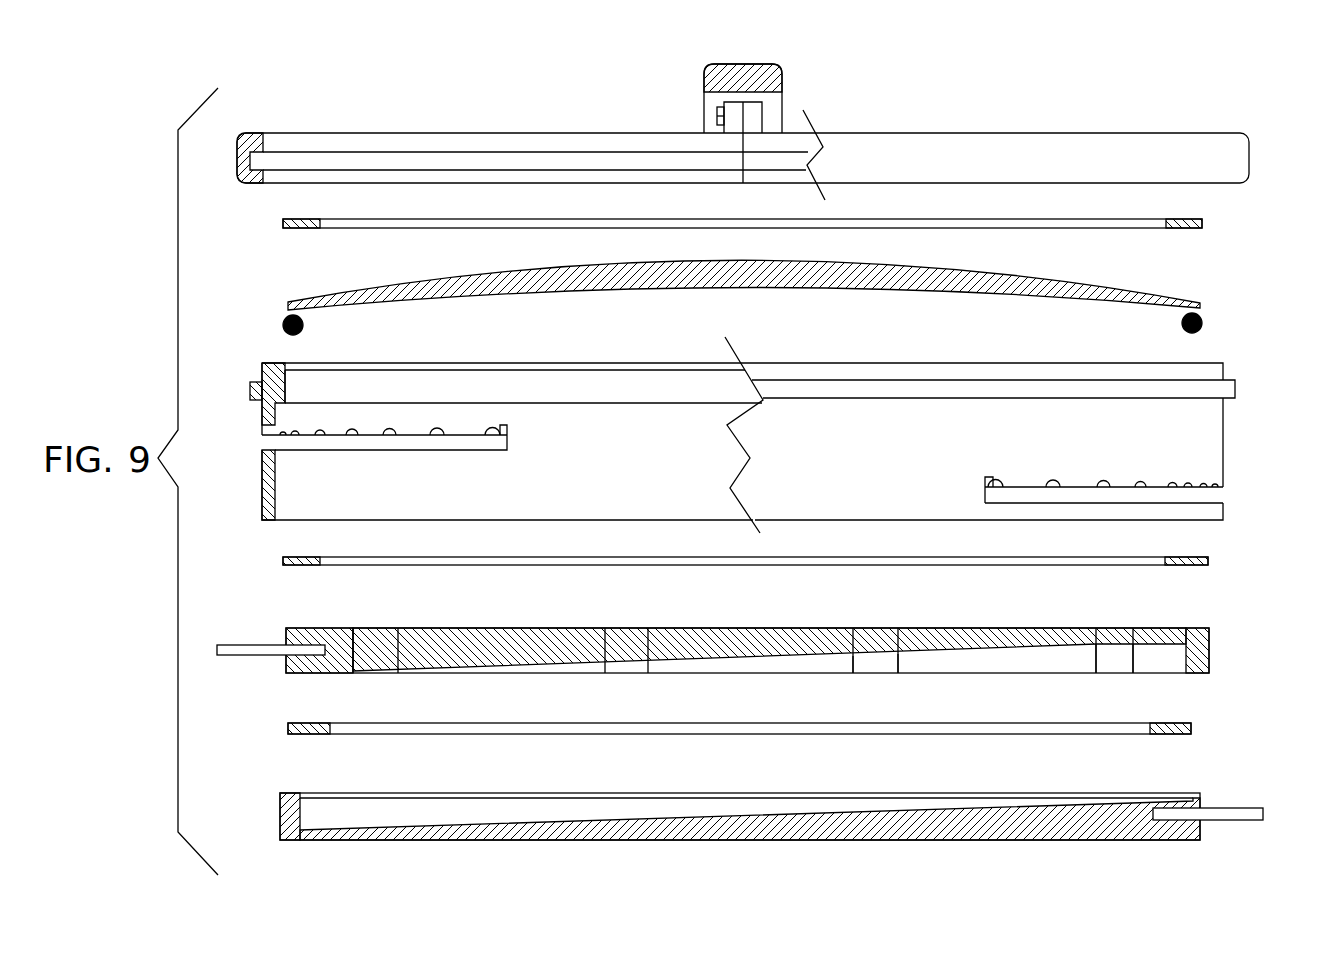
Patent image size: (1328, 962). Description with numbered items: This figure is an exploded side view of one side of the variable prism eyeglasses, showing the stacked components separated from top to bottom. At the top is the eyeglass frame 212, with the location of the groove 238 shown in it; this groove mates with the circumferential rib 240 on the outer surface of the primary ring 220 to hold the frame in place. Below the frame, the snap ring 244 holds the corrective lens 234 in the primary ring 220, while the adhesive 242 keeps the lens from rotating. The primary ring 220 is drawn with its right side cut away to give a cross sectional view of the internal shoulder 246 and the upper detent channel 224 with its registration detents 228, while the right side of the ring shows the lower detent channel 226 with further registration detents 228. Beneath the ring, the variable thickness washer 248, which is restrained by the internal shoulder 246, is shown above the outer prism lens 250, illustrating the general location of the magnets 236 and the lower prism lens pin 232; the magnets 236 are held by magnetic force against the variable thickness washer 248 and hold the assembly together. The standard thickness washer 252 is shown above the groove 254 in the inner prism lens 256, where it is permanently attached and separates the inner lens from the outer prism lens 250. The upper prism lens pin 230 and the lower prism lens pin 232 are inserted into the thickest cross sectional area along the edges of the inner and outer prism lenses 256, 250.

The eyeglass frame 212 is at (1027, 157).
The groove 238 is at (382, 158).
The snap ring 244 is at (1178, 228).
The corrective lens 234 is at (357, 290).
The adhesive 242 is at (1203, 327).
The primary ring 220 is at (1203, 432).
The circumferential rib 240 is at (1233, 388).
The internal shoulder 246 is at (283, 405).
The upper detent channel 224 is at (268, 443).
The lower detent channel 226 is at (1210, 495).
The registration detents 228 is at (492, 425).
The variable thickness washer 248 is at (1183, 565).
The outer prism lens 250 is at (505, 638).
The lower prism lens pin 232 is at (262, 648).
The magnets 236 is at (872, 660).
The standard thickness washer 252 is at (305, 733).
The upper prism lens pin 230 is at (1238, 818).
The inner prism lens 256 is at (960, 830).
The groove 254 is at (1175, 793).